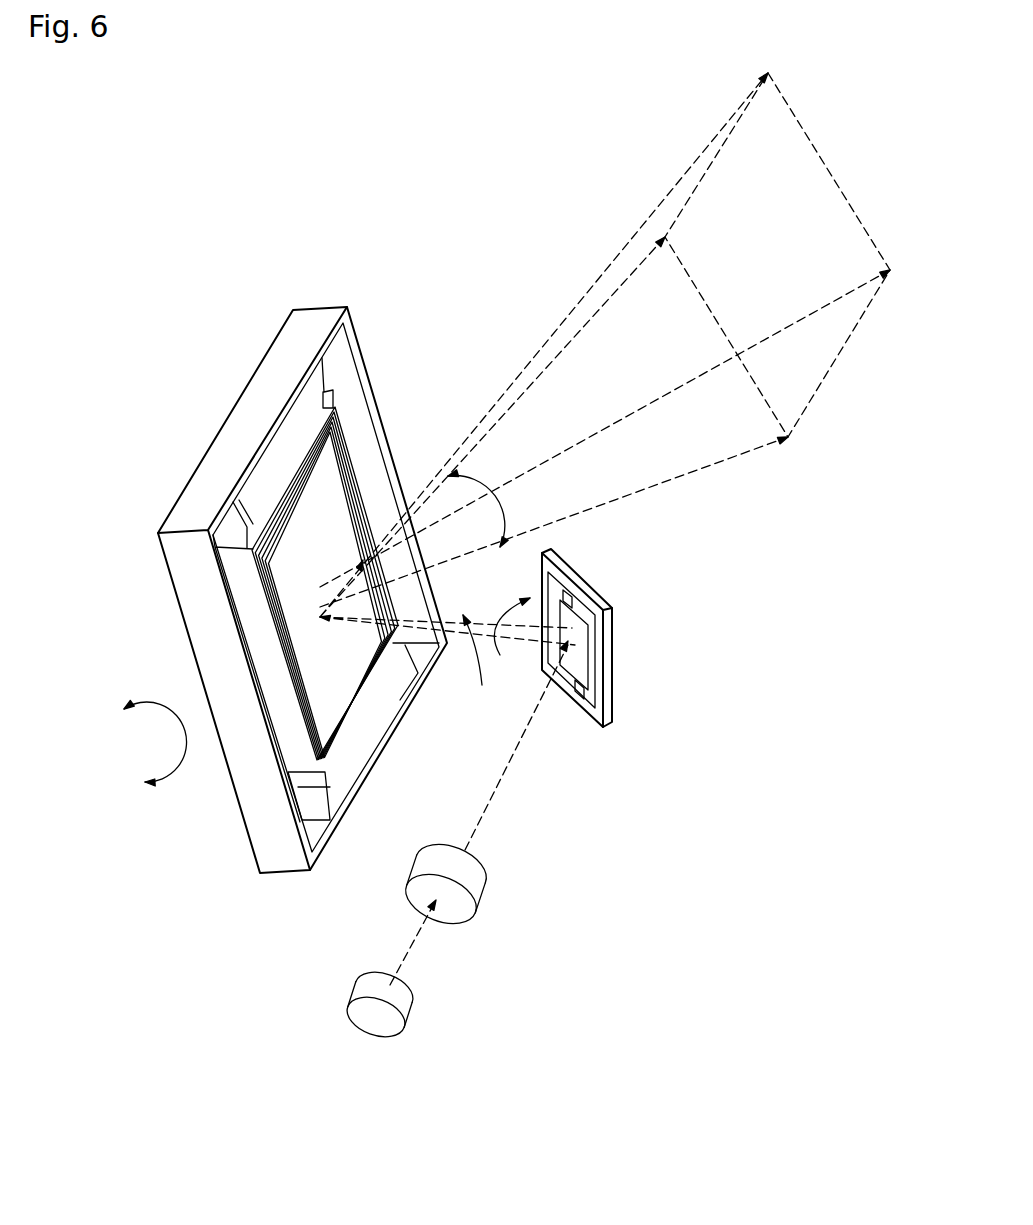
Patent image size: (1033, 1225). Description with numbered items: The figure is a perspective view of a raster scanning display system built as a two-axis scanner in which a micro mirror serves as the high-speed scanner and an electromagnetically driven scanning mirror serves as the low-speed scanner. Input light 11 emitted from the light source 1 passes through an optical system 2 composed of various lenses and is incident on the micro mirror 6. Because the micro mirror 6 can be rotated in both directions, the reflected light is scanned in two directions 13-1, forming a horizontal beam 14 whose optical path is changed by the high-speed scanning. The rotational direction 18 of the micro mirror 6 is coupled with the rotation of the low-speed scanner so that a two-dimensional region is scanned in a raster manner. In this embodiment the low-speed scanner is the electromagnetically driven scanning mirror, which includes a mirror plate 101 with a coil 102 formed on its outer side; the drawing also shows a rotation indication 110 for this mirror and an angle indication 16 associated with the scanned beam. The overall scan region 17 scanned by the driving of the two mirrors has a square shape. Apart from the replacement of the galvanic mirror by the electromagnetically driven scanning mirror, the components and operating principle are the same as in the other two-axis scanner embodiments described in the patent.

The light source 1 is at (395, 998).
The optical system 2 is at (467, 880).
The micro mirror 6 is at (577, 643).
The input light 11 is at (507, 768).
The two directions 13-1 is at (506, 608).
The horizontal beam 14 is at (481, 666).
The scan angle 16 is at (605, 345).
The overall scan region 17 is at (797, 189).
The rotational direction of the micro mirror 18 is at (562, 564).
The mirror plate 101 is at (317, 507).
The coil 102 is at (283, 492).
The rotation direction of frame 110 is at (141, 743).